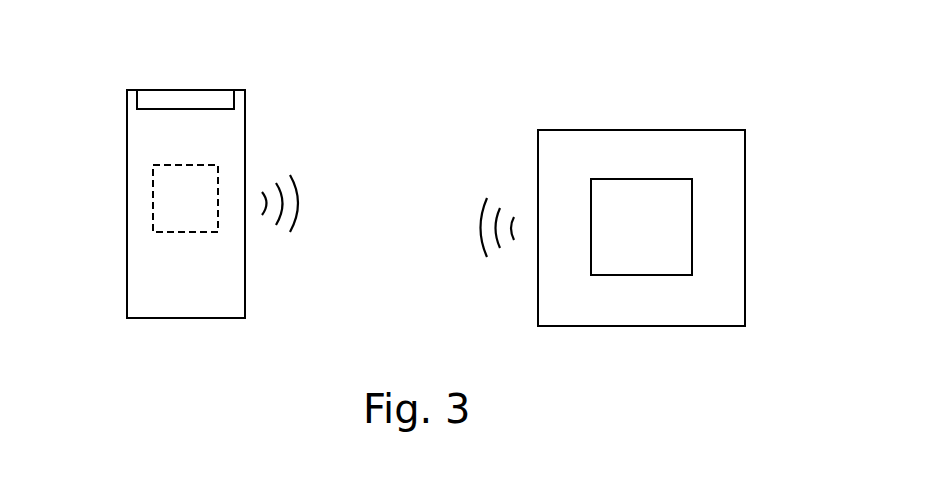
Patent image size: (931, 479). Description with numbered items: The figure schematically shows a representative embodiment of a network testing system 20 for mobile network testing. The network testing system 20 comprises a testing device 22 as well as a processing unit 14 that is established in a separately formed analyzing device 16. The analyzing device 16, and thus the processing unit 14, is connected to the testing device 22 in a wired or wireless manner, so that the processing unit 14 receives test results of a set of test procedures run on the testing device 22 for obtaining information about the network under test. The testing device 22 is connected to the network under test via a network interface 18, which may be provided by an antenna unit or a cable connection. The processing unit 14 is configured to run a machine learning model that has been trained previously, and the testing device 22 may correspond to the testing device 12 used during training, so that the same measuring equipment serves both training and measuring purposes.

The testing device 12 is at (153, 288).
The processing unit 14 is at (153, 193).
The analyzing device 16 is at (613, 302).
The network interface 18 is at (183, 100).
The network testing system 20 is at (97, 108).
The testing device 22 is at (191, 300).